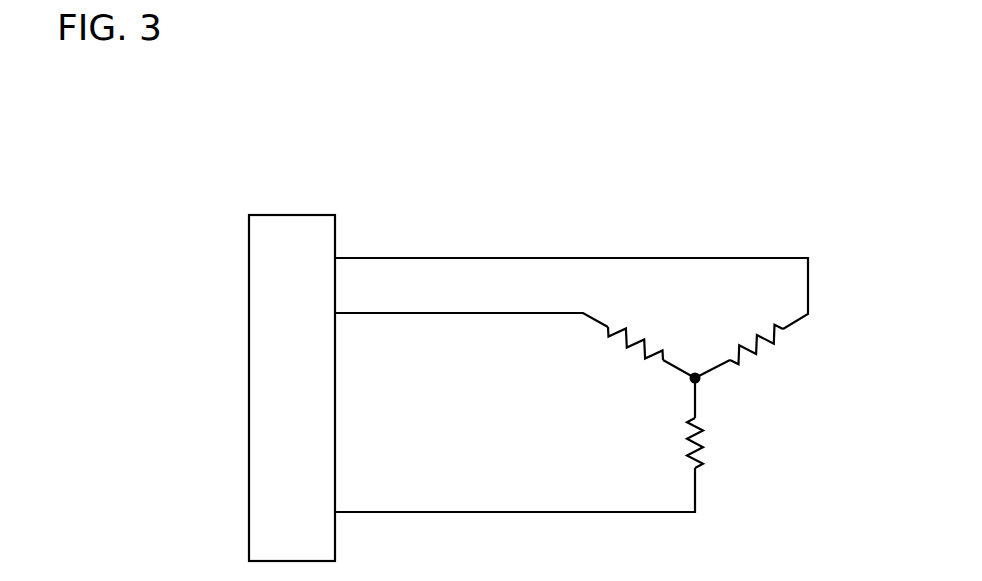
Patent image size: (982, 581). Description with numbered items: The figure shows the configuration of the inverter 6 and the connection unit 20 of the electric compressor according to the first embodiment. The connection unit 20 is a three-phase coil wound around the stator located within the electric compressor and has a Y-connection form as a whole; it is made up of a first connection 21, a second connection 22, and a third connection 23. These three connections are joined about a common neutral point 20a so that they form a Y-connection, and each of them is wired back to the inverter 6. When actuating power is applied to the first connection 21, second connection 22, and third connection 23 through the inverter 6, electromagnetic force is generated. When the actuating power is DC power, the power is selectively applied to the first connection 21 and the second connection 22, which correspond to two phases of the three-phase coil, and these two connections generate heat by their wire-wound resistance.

The inverter 6 is at (292, 215).
The connection unit 20 is at (694, 276).
The neutral point 20a is at (695, 378).
The first connection 21 is at (588, 354).
The second connection 22 is at (802, 359).
The third connection 23 is at (737, 439).